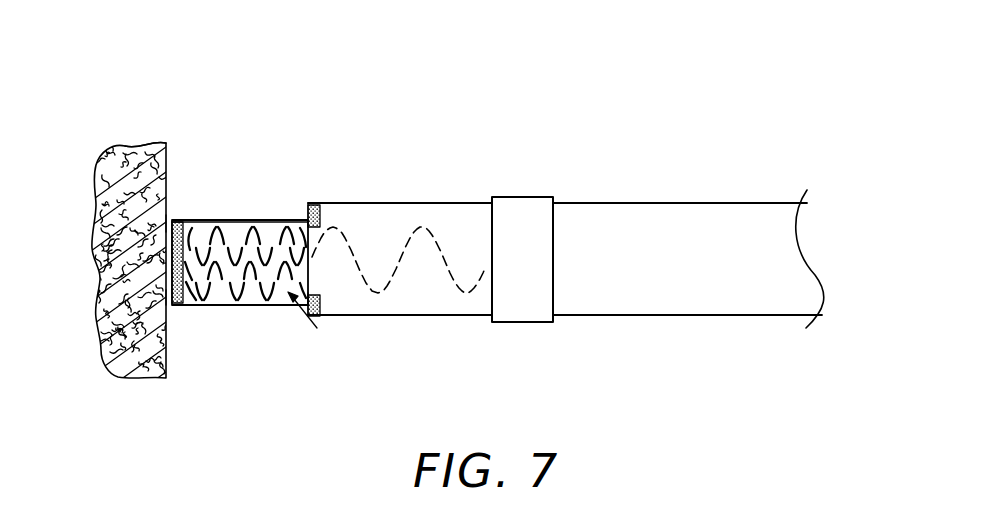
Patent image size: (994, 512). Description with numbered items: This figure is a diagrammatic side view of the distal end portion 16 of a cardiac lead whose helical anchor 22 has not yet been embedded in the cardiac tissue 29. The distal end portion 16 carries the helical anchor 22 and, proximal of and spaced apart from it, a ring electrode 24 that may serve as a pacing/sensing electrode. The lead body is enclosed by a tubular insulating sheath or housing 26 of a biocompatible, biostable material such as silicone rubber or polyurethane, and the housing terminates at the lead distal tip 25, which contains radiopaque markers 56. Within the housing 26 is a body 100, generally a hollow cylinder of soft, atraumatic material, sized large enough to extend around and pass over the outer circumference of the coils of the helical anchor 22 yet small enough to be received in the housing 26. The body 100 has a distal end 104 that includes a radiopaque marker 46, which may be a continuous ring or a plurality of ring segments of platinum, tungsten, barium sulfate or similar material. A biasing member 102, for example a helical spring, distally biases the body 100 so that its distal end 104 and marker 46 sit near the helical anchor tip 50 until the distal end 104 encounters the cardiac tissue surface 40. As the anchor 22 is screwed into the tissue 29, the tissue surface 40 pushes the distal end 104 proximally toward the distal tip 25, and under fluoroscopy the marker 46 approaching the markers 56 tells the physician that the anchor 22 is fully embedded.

The distal end portion 16 is at (634, 108).
The helical anchor 22 is at (217, 226).
The ring electrode 24 is at (520, 197).
The lead distal tip 25 is at (308, 233).
The tubular insulating sheath or housing 26 is at (688, 315).
The cardiac tissue 29 is at (129, 172).
The cardiac tissue surface 40 is at (167, 154).
The radiopaque marker 46 is at (182, 293).
The helical anchor tip 50 is at (166, 297).
The radiopaque markers 56 is at (313, 200).
The body 100 is at (258, 222).
The biasing member 102 is at (420, 230).
The distal end 104 is at (166, 224).